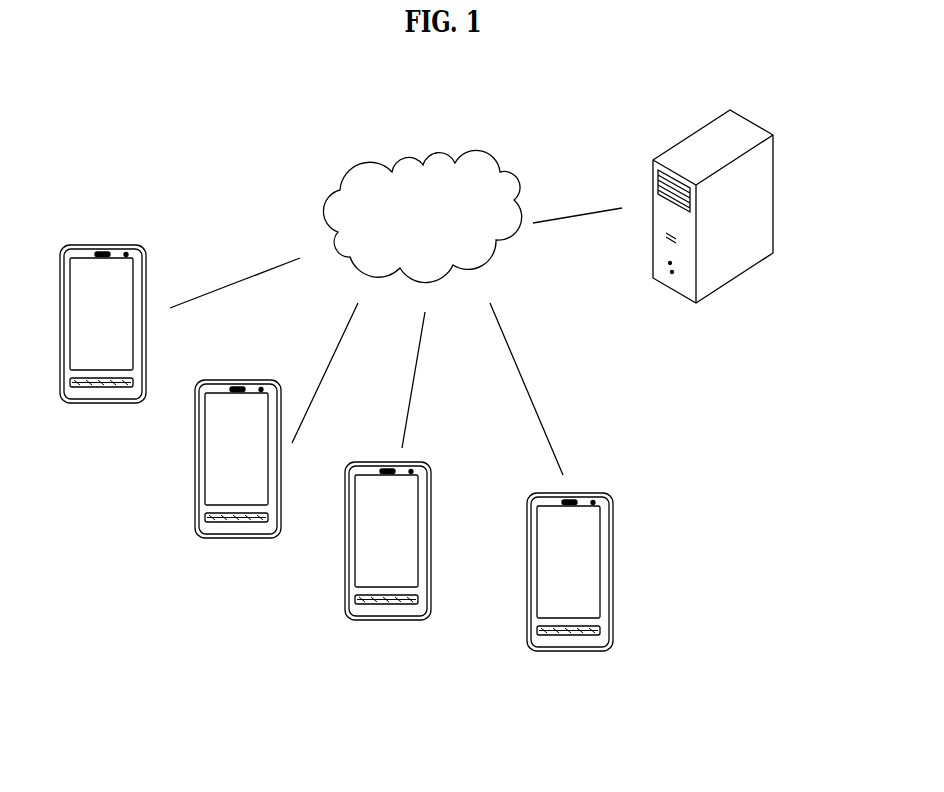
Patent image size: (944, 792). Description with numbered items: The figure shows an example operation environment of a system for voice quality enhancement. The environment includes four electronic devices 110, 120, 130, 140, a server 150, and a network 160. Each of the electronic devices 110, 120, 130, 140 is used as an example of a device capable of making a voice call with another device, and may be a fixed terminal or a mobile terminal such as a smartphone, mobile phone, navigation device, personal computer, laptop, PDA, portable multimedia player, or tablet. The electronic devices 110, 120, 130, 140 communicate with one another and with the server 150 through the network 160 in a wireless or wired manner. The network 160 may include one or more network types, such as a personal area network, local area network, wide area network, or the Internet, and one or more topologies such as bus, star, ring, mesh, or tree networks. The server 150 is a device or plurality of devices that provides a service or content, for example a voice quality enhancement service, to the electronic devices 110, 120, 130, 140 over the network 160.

The electronic device 110 is at (103, 403).
The electronic device 120 is at (238, 538).
The electronic device 130 is at (388, 620).
The electronic device 140 is at (570, 651).
The server 150 is at (773, 187).
The network 160 is at (350, 166).